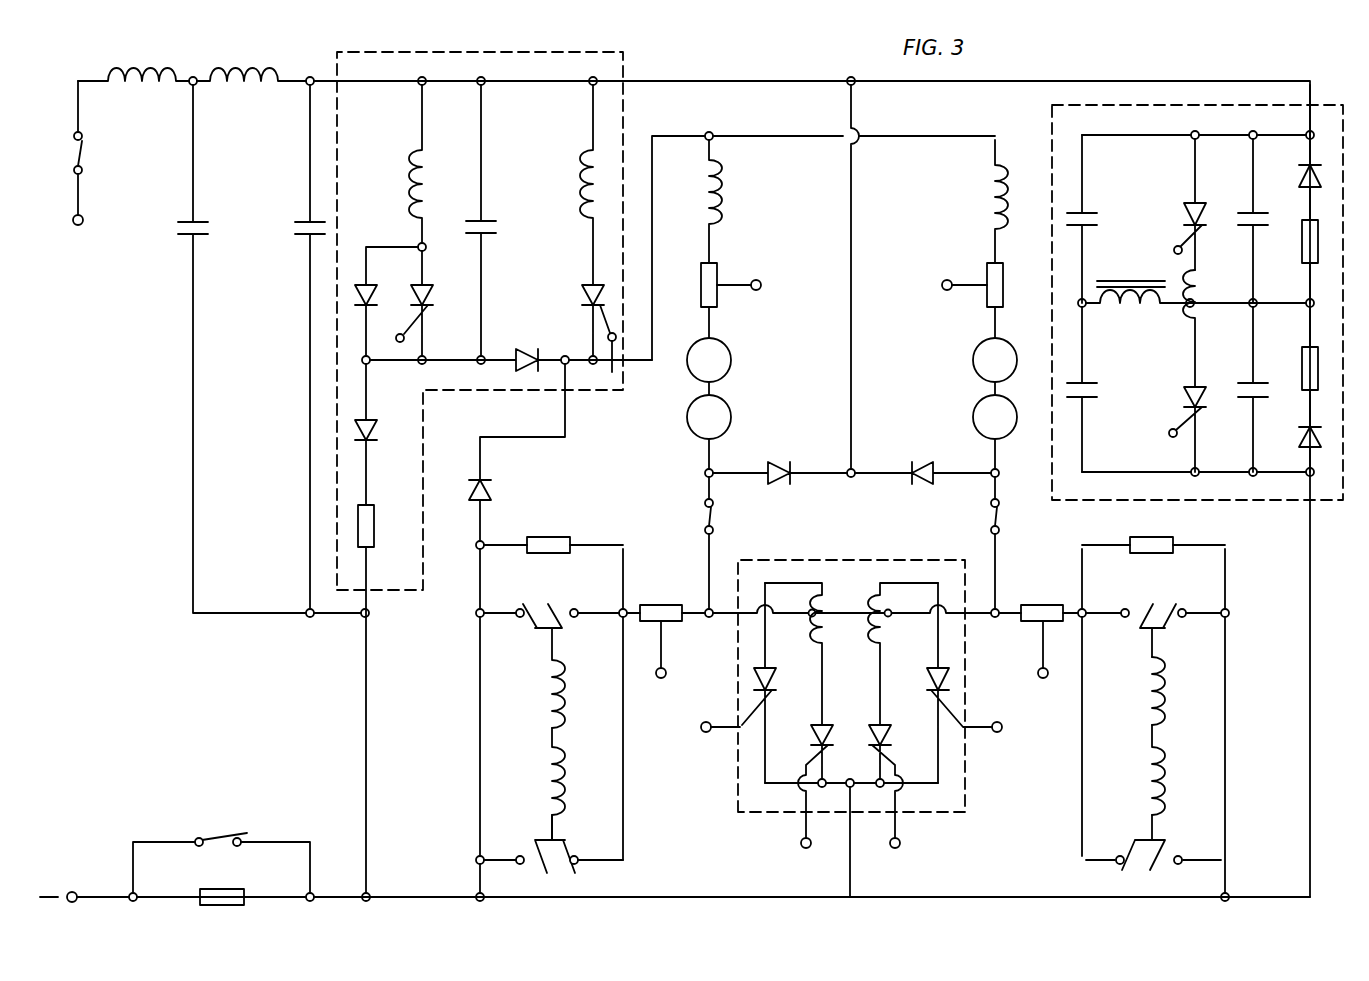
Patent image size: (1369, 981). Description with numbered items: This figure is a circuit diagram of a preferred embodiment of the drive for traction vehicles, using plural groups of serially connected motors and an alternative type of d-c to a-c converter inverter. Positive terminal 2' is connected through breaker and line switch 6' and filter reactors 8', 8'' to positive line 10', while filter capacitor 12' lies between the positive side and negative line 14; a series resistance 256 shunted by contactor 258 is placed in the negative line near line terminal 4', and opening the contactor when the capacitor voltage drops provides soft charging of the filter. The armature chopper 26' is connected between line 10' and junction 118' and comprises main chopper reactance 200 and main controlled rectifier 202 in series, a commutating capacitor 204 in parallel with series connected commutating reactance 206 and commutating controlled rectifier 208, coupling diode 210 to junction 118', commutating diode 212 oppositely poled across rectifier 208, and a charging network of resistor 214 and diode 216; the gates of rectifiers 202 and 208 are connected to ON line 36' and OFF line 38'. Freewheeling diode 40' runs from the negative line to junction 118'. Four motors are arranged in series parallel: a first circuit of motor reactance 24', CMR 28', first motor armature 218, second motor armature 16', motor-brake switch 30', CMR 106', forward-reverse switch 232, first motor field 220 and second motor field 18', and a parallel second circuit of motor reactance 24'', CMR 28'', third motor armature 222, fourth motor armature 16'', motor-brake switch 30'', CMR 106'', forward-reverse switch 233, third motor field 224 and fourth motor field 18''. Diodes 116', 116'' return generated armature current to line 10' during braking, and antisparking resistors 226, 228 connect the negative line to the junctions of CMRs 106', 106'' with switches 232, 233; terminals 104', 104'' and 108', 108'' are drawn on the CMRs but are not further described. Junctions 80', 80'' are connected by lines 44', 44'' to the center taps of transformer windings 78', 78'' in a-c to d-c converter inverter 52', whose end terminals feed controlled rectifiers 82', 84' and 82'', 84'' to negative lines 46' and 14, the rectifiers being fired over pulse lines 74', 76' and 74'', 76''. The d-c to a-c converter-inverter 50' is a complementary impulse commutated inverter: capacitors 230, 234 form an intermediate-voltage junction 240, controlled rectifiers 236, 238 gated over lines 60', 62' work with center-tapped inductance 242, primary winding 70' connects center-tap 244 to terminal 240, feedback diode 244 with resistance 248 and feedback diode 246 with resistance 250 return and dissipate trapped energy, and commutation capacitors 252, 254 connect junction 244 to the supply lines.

The positive terminal 2' is at (92, 204).
The line terminal 4' is at (67, 880).
The breaker and line switch 6' is at (102, 127).
The filter reactor 8' is at (133, 59).
The filter reactor 8'' is at (251, 59).
The positive line 10' is at (812, 465).
The filter capacitor 12' is at (273, 351).
The negative line 14 is at (443, 897).
The second motor armature 16' is at (735, 425).
The fourth motor armature 16'' is at (961, 428).
The second motor field 18' is at (526, 784).
The fourth motor field 18'' is at (1125, 770).
The motor reactance 24' is at (742, 201).
The motor reactance 24'' is at (956, 201).
The armature chopper 26' is at (446, 314).
The CMR 28' is at (688, 281).
The CMR 28'' is at (1017, 281).
The motor-brake switch 30' is at (722, 543).
The motor-brake switch 30'' is at (955, 543).
The ON line 36' is at (641, 364).
The OFF line 38' is at (392, 358).
The freewheeling diode 40' is at (505, 501).
The line 44' is at (702, 638).
The line 44'' is at (995, 638).
The negative line 46' is at (879, 842).
The d-c to a-c converter-inverter 50' is at (1158, 298).
The a-c to d-c converter inverter 52' is at (818, 690).
The firing pulse line 60' is at (1155, 236).
The firing pulse line 62' is at (1144, 418).
The primary winding 70' is at (1107, 328).
The firing pulse line 74' is at (700, 746).
The firing pulse line 74'' is at (1016, 745).
The firing pulse line 76' is at (774, 834).
The firing pulse line 76'' is at (928, 833).
The transformer winding 78' is at (811, 654).
The transformer winding 78'' is at (885, 654).
The junction 80' is at (682, 569).
The junction 80'' is at (1019, 569).
The controlled rectifier 82' is at (775, 683).
The controlled rectifier 82'' is at (940, 683).
The controlled rectifier 84' is at (803, 770).
The controlled rectifier 84'' is at (899, 765).
The sensing terminal 104' is at (771, 266).
The sensing terminal 104'' is at (932, 266).
The CMR 106' is at (666, 589).
The CMR 106'' is at (1042, 589).
The terminal 108' is at (649, 673).
The terminal 108'' is at (1046, 675).
The diode 116' is at (780, 447).
The diode 116'' is at (923, 447).
The junction 118' is at (823, 220).
The main chopper reactance 200 is at (586, 180).
The main controlled rectifier 202 is at (582, 289).
The commutating capacitor 204 is at (485, 222).
The commutating reactance 206 is at (409, 178).
The commutating controlled rectifier 208 is at (430, 275).
The coupling diode 210 is at (522, 348).
The commutating diode 212 is at (366, 281).
The resistor 214 is at (374, 531).
The diode 216 is at (372, 433).
The first motor armature 218 is at (732, 362).
The first motor field 220 is at (540, 682).
The third motor armature 222 is at (971, 362).
The third motor field 224 is at (1142, 685).
The antisparking resistor 226 is at (559, 535).
The antisparking resistor 228 is at (1158, 539).
The capacitor 230 is at (1090, 216).
The forward-reverse switch 232 is at (553, 722).
The forward-reverse switch 233 is at (1157, 720).
The capacitor 234 is at (1091, 401).
The controlled rectifier 236 is at (1188, 201).
The controlled rectifier 238 is at (1188, 400).
The junction 240 is at (1088, 300).
The center-tapped inductance 242 is at (1201, 282).
The feedback diode 244 is at (1284, 168).
The feedback diode 246 is at (1299, 439).
The small resistance 248 is at (1303, 251).
The resistance 250 is at (1300, 359).
The commutation capacitor 252 is at (1238, 208).
The commutation capacitor 254 is at (1234, 384).
The series resistance 256 is at (204, 890).
The contactor 258 is at (206, 833).